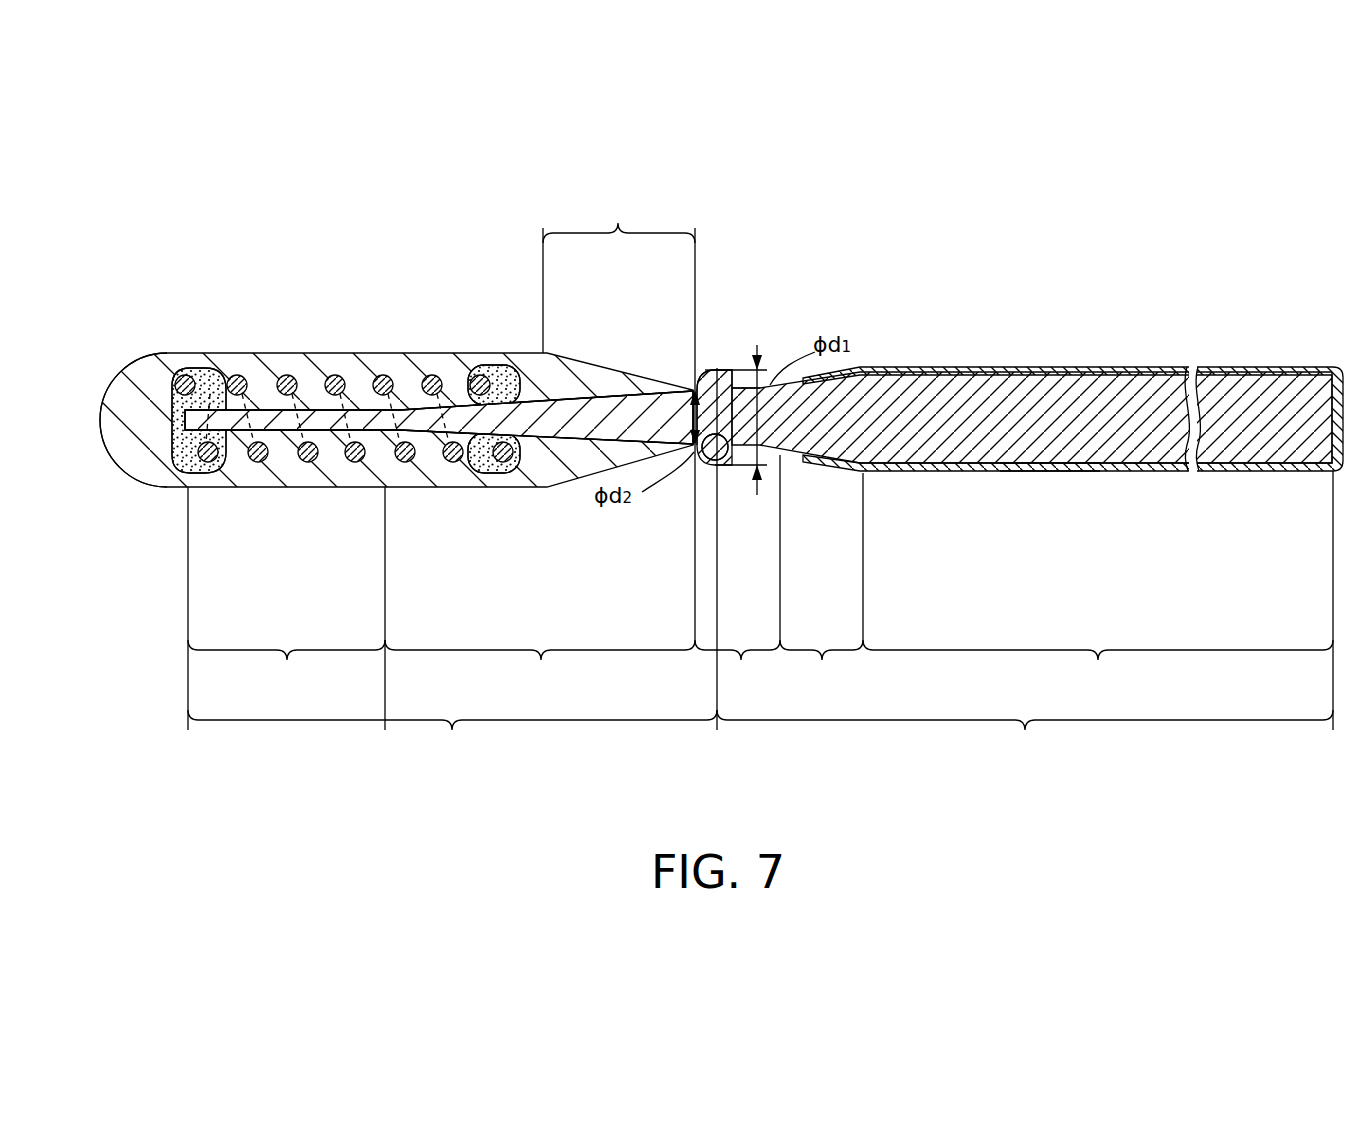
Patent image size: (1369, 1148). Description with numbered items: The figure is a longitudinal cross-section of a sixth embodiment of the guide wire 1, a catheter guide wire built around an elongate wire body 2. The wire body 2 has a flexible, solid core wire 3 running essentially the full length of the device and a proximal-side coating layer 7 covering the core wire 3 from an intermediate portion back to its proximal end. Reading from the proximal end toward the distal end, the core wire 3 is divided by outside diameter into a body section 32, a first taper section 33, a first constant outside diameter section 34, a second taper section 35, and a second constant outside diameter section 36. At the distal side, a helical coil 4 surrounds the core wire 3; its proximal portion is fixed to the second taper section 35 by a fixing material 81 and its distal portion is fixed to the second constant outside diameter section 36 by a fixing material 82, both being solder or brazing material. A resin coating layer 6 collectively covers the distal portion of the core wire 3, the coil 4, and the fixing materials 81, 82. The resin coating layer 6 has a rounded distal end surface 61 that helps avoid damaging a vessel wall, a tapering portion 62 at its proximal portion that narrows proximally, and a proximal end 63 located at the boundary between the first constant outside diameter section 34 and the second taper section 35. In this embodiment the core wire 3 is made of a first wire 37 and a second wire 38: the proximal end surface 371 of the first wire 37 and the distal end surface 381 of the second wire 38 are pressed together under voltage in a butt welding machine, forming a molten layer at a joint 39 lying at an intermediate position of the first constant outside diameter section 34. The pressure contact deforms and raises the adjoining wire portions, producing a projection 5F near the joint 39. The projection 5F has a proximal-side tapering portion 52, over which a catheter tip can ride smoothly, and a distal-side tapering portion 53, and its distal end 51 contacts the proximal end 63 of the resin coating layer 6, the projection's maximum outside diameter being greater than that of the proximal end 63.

The guide wire 1 is at (1036, 196).
The wire body 2 is at (1043, 358).
The core wire 3 is at (990, 398).
The helical coil 4 is at (428, 382).
The projection 5F is at (730, 372).
The resin coating layer 6 is at (360, 378).
The coating layer 7 is at (1045, 472).
The body section 32 is at (1098, 665).
The first taper section 33 is at (821, 665).
The first constant outside diameter section 34 is at (737, 665).
The second taper section 35 is at (540, 666).
The second constant outside diameter section 36 is at (286, 666).
The first wire 37 is at (452, 736).
The second wire 38 is at (1025, 736).
The joint 39 is at (724, 365).
The distal end 51 is at (693, 385).
The proximal-side tapering portion 52 is at (735, 378).
The distal-side tapering portion 53 is at (701, 375).
The distal end surface 61 is at (105, 420).
The tapering portion 62 is at (619, 276).
The proximal end 63 is at (693, 385).
The fixing material 81 is at (490, 375).
The fixing material 82 is at (208, 370).
The proximal end surface 371 is at (724, 462).
The distal end surface 381 is at (698, 462).